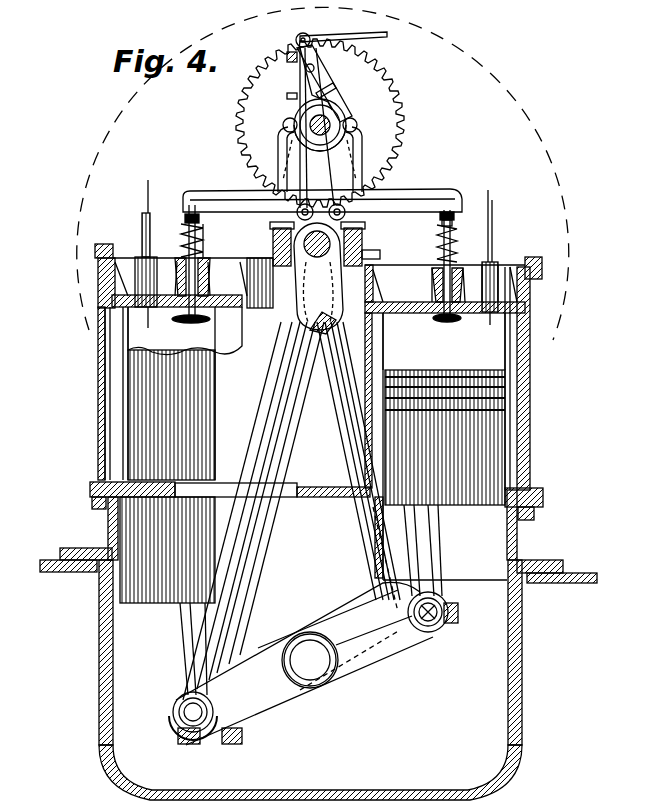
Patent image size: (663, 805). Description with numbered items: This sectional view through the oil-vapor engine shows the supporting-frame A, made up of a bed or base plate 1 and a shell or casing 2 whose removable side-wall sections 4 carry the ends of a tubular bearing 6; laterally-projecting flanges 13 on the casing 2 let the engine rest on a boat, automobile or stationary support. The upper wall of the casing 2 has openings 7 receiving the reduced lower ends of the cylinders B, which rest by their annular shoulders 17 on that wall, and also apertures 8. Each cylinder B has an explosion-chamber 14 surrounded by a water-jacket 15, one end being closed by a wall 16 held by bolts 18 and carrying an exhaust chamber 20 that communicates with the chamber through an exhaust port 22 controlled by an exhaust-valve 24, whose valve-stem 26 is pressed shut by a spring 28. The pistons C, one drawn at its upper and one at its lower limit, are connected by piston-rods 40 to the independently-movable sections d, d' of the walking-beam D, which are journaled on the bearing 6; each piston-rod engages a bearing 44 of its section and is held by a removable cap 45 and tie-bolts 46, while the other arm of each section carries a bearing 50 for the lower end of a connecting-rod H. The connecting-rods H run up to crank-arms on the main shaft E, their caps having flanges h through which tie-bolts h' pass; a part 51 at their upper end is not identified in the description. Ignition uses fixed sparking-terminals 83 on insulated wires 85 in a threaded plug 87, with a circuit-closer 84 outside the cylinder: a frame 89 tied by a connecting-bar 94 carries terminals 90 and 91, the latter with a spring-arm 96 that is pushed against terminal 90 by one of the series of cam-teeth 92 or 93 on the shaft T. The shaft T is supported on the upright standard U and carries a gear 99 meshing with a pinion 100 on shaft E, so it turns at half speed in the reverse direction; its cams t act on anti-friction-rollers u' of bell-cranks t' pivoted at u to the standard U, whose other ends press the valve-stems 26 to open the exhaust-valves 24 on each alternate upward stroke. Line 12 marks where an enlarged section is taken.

The bed or base plate 1 is at (62, 566).
The shell or casing 2 is at (332, 761).
The removable side-wall sections 4 is at (100, 681).
The tubular bearing 6 is at (283, 667).
The openings 7 is at (368, 492).
The apertures 8 is at (201, 499).
The combustion chamber 12 is at (148, 190).
The laterally-projecting flanges 13 is at (60, 562).
The explosion-chamber 14 is at (120, 356).
The water-jacket 15 is at (103, 334).
The end wall 16 is at (237, 296).
The annular shoulder 17 is at (92, 487).
The bolts 18 is at (100, 430).
The exhaust chamber 20 is at (212, 290).
The exhaust port 22 is at (206, 320).
The exhaust-valve 24 is at (450, 332).
The valve-stem 26 is at (184, 232).
The spring 28 is at (205, 245).
The piston-rods 40 is at (442, 552).
The bearings 44 is at (205, 746).
The removable caps 45 is at (178, 736).
The tie-bolts 46 is at (440, 532).
The bearing 50 is at (205, 704).
The eccentric link 51 is at (315, 321).
The sparking-terminals 83 is at (157, 328).
The circuit-closer 84 is at (336, 110).
The insulated conductors or wires 85 is at (146, 206).
The threaded tube or plug 87 is at (140, 258).
The frame 89 is at (300, 77).
The terminal 90 is at (287, 96).
The terminal 91 is at (295, 50).
The cam-teeth 92 is at (342, 122).
The cam-teeth 93 is at (346, 138).
The connecting-bar 94 is at (310, 38).
The spring-arm 96 is at (315, 72).
The gear 99 is at (404, 123).
The pinion 100 is at (388, 193).
The supporting-frame A is at (522, 601).
The cylinders B is at (118, 399).
The pistons C is at (447, 428).
The walking-beam D is at (328, 712).
The main shaft E is at (337, 242).
The connecting-rods H is at (355, 397).
The shaft T is at (297, 125).
The upright standard U is at (320, 159).
The walking-beam section d is at (256, 701).
The walking-beam section d' is at (267, 742).
The laterally-projecting flanges h is at (262, 471).
The tie-bolts h' is at (269, 491).
The cams t is at (294, 127).
The bell-cranks t' is at (290, 164).
The pivot u is at (319, 209).
The anti-friction-rollers u' is at (317, 125).